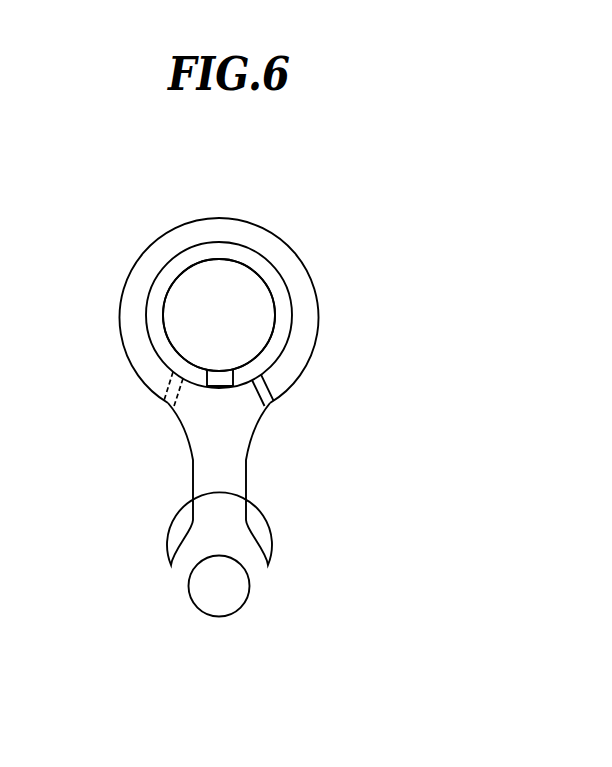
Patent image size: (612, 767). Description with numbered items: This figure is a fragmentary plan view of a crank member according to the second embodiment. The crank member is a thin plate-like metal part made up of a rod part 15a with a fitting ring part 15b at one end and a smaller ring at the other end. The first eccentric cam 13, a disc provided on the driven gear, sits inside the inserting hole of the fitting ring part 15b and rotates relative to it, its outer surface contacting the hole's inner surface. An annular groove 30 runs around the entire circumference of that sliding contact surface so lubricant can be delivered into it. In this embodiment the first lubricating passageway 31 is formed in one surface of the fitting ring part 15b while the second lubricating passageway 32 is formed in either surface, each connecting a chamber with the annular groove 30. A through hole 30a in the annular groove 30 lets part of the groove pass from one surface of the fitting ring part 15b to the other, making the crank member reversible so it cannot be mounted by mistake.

The fitting ring part 15b is at (162, 245).
The rod part 15a is at (230, 495).
The annular groove 30 is at (263, 267).
The first eccentric cam 13 is at (260, 312).
The first lubricating passageway 31 is at (263, 382).
The second lubricating passageway 32 is at (170, 398).
The through hole 30a is at (222, 382).